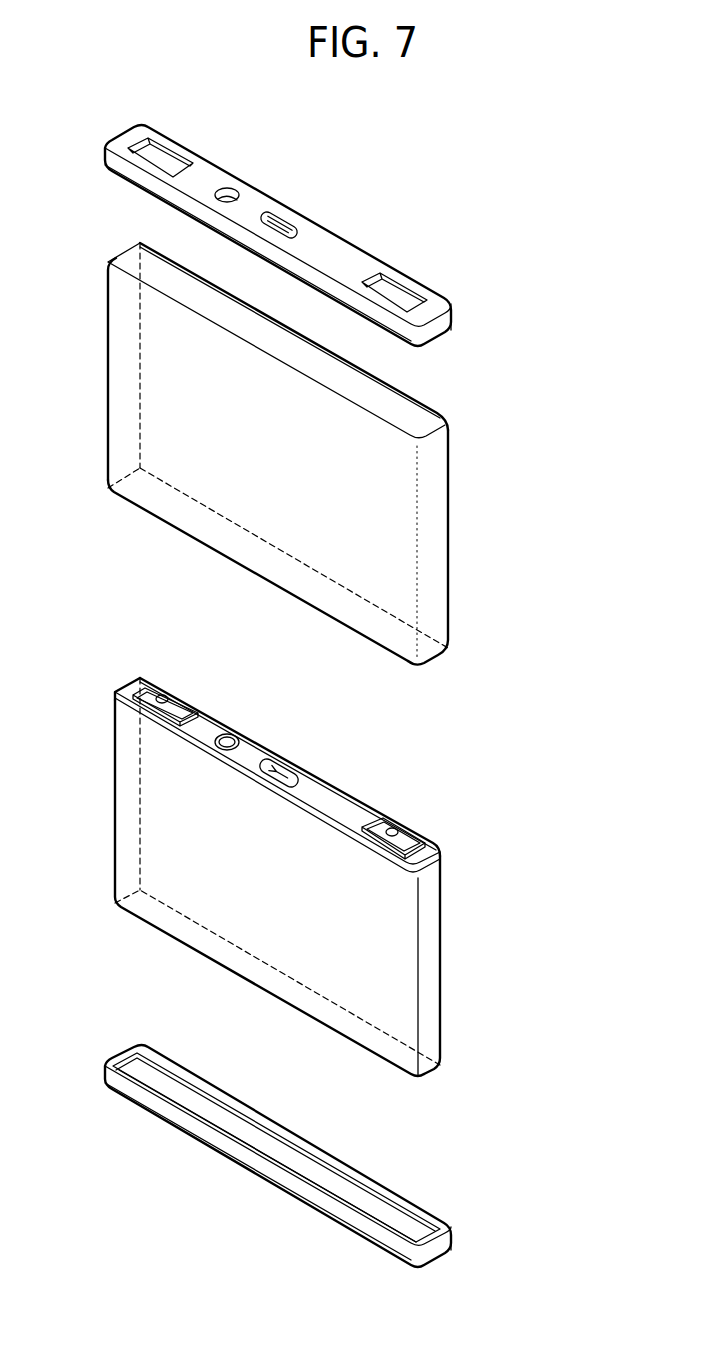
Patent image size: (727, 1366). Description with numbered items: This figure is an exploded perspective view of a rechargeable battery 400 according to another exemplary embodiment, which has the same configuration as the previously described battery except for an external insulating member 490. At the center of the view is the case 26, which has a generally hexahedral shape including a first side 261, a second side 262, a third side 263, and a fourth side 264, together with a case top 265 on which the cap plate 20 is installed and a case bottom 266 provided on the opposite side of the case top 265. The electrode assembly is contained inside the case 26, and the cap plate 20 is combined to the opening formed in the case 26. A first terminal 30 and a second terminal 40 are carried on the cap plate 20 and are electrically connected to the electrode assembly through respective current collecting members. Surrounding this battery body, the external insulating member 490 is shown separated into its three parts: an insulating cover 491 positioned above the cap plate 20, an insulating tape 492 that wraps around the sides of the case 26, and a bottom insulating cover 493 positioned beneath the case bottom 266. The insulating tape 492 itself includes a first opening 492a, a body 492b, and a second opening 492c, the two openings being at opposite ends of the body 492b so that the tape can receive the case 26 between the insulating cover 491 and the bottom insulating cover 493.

The rechargeable battery 400 is at (426, 174).
The external insulating member 490 is at (450, 296).
The insulating cover 491 is at (320, 229).
The insulating tape 492 is at (586, 663).
The first opening 492a is at (402, 417).
The body 492b is at (397, 567).
The second opening 492c is at (400, 632).
The bottom insulating cover 493 is at (181, 1121).
The cap plate 20 is at (314, 772).
The case 26 is at (259, 969).
The first side 261 is at (163, 827).
The second side 262 is at (423, 928).
The third side 263 is at (323, 850).
The fourth side 264 is at (128, 777).
The case top 265 is at (250, 748).
The case bottom 266 is at (361, 1030).
The first terminal 30 is at (161, 685).
The second terminal 40 is at (410, 830).